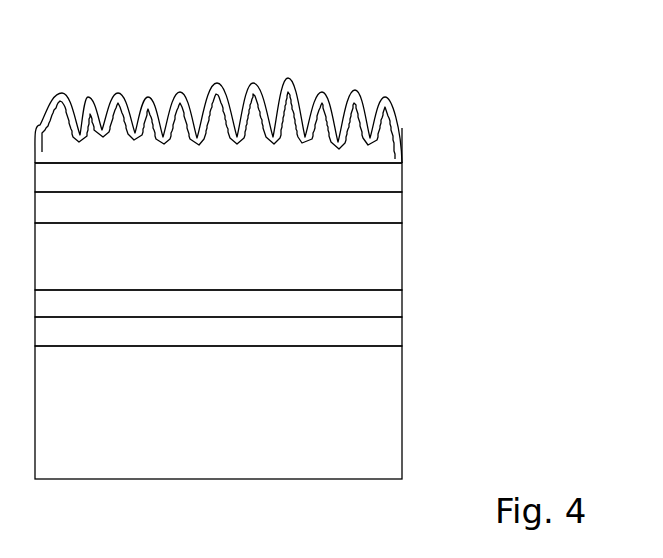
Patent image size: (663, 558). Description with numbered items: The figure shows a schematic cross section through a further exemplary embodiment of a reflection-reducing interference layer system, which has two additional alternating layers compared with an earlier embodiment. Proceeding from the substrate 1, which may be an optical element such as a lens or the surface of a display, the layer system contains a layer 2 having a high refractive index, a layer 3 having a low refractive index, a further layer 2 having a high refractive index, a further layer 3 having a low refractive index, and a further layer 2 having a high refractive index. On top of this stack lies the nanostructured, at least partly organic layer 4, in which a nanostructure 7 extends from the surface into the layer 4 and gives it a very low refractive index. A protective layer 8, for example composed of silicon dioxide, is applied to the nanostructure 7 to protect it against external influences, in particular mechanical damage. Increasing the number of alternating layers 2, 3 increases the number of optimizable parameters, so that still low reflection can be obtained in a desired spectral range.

The substrate 1 is at (388, 414).
The layer having a high refractive index 2 is at (392, 176).
The layer having a low refractive index 3 is at (390, 210).
The partly organic layer 4 is at (389, 131).
The nanostructure 7 is at (242, 82).
The protective layer 8 is at (242, 102).